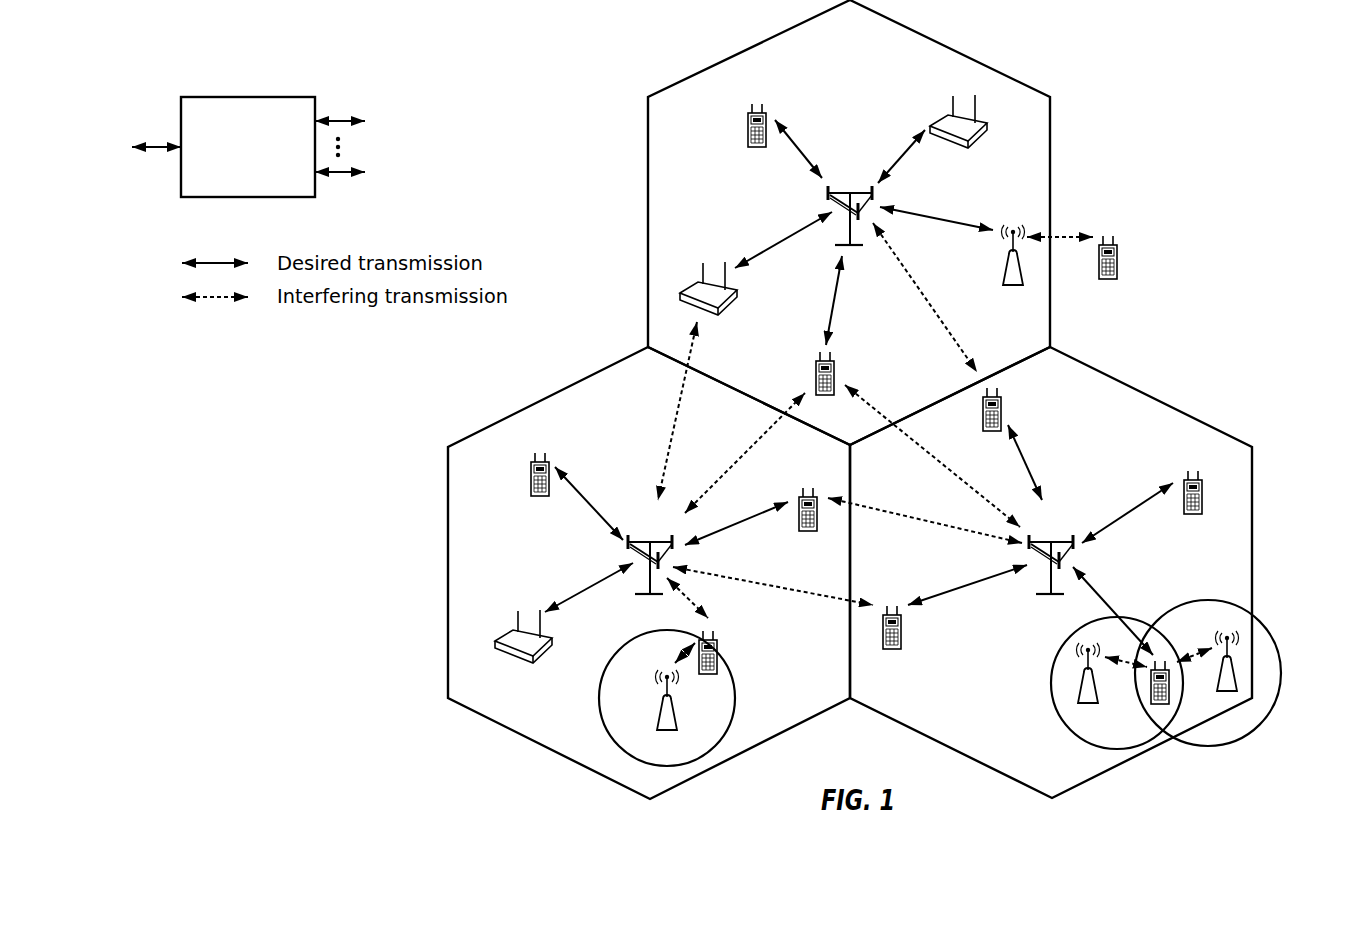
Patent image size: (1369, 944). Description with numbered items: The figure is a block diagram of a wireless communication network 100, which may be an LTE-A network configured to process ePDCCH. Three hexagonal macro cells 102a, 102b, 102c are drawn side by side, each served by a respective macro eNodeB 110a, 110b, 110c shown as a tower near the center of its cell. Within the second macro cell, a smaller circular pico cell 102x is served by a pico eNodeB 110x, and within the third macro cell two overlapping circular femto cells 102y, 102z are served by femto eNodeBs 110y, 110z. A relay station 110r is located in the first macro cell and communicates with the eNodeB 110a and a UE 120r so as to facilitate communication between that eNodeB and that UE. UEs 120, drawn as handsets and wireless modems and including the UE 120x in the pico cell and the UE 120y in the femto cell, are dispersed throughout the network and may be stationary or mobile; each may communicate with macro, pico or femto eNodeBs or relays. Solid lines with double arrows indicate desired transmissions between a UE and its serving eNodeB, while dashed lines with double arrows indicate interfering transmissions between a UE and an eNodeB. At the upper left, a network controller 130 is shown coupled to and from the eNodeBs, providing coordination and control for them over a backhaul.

The wireless communication network 100 is at (1190, 57).
The macro cell 102a is at (950, 44).
The macro cell 102b is at (550, 398).
The macro cell 102c is at (1152, 396).
The pico cell 102x is at (620, 647).
The femto cell 102y is at (1060, 656).
The femto cell 102z is at (1207, 600).
The macro eNodeB 110a is at (846, 192).
The macro eNodeB 110b is at (647, 541).
The macro eNodeB 110c is at (1048, 541).
The relay station 110r is at (1002, 272).
The pico eNodeB 110x is at (676, 723).
The femto eNodeB 110y is at (1097, 698).
The femto eNodeB 110z is at (1236, 684).
The UE 120 is at (746, 118).
The UE 120r is at (1118, 272).
The UE 120x is at (718, 648).
The UE 120y is at (1151, 700).
The network controller 130 is at (241, 97).